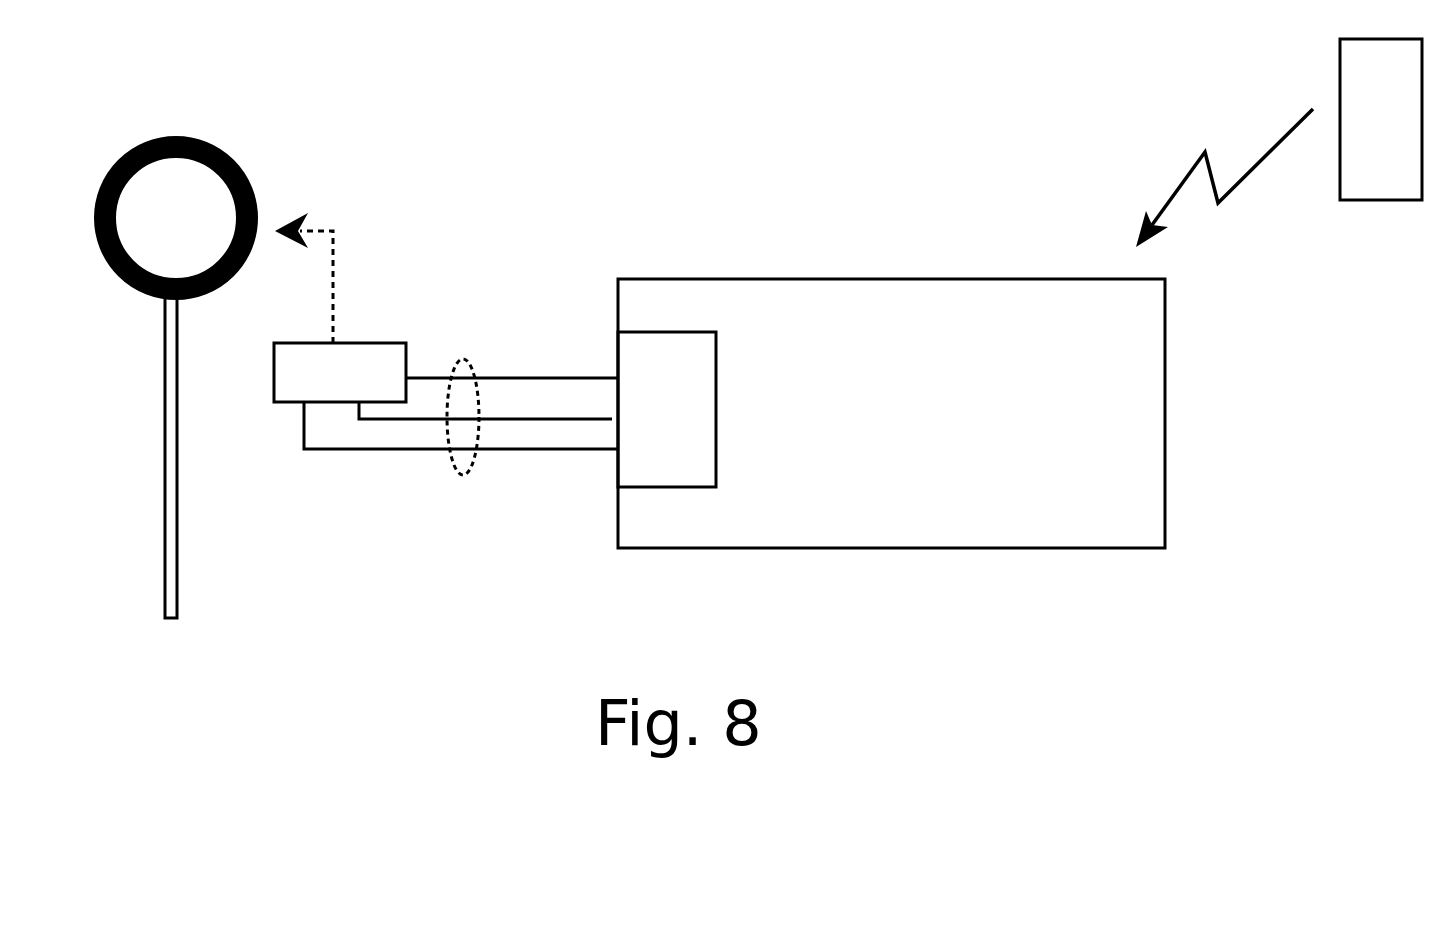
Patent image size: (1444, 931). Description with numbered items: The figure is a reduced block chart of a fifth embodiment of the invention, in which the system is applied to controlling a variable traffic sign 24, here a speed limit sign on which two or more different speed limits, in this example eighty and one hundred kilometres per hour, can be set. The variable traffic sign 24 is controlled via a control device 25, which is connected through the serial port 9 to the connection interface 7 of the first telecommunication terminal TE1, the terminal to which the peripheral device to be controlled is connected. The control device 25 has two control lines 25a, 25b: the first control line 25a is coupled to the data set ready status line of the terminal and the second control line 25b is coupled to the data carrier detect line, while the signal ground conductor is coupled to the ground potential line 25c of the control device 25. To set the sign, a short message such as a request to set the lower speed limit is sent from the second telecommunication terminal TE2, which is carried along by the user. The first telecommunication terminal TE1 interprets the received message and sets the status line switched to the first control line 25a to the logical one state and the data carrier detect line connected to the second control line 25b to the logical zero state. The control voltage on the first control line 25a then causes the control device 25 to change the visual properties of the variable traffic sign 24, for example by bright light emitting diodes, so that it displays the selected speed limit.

The variable traffic sign 24 is at (233, 163).
The control device 25 is at (383, 343).
The first control line 25a is at (420, 376).
The second control line 25b is at (403, 419).
The ground potential line 25c is at (325, 449).
The serial port 9 is at (473, 476).
The connection interface 7 is at (675, 488).
The first telecommunication terminal TE1 is at (748, 277).
The second telecommunication terminal TE2 is at (1407, 202).